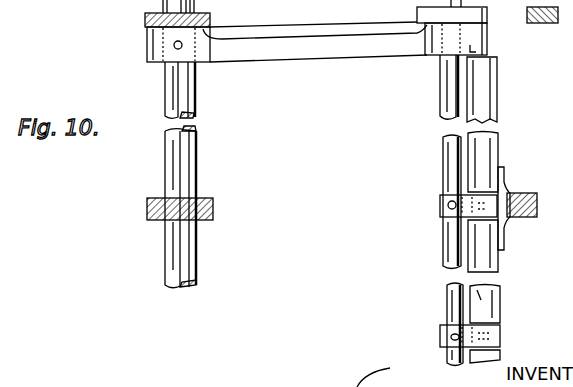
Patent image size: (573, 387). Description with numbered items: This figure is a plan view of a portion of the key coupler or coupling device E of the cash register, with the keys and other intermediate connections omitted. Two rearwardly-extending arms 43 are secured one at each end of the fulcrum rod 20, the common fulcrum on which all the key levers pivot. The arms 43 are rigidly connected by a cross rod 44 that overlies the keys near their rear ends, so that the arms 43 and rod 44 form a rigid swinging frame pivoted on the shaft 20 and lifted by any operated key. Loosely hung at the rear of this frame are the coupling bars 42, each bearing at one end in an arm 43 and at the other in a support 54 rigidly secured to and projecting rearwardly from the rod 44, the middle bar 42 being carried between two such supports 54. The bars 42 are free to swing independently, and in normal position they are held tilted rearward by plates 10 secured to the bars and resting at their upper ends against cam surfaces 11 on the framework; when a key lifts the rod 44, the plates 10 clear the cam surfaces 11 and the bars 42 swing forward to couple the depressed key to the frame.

The plate 10 is at (506, 186).
The cam surface 11 is at (522, 217).
The fulcrum rod 20 is at (166, 158).
The coupling bar 42 is at (470, 209).
The arm 43 is at (315, 42).
The cross rod 44 is at (443, 168).
The support 54 is at (452, 210).
The key coupler E is at (470, 63).